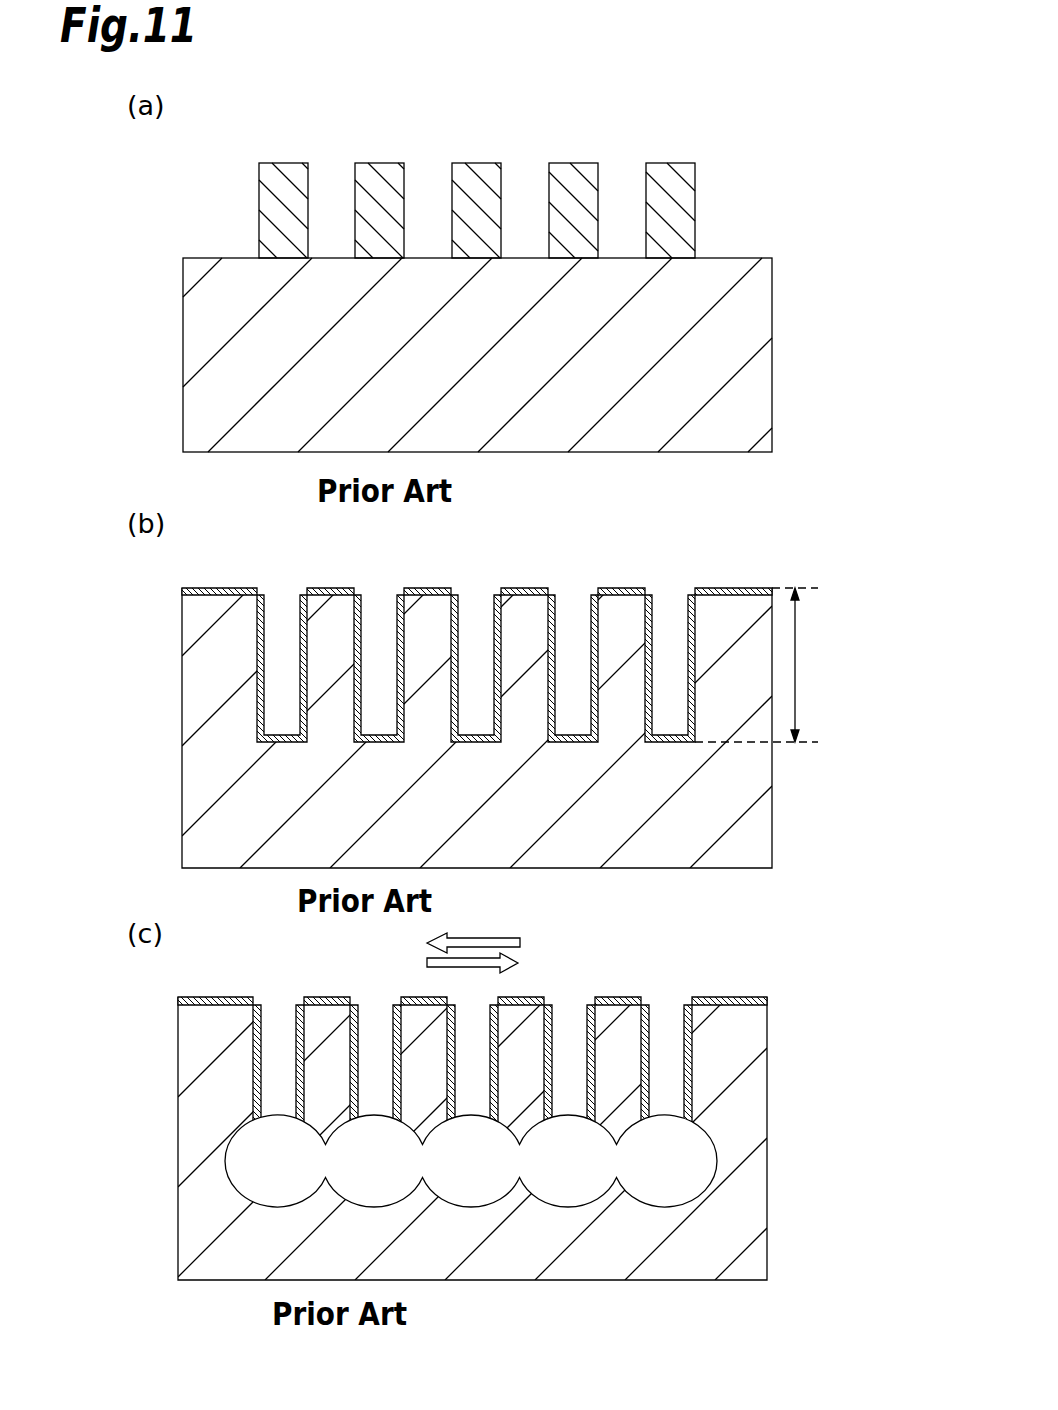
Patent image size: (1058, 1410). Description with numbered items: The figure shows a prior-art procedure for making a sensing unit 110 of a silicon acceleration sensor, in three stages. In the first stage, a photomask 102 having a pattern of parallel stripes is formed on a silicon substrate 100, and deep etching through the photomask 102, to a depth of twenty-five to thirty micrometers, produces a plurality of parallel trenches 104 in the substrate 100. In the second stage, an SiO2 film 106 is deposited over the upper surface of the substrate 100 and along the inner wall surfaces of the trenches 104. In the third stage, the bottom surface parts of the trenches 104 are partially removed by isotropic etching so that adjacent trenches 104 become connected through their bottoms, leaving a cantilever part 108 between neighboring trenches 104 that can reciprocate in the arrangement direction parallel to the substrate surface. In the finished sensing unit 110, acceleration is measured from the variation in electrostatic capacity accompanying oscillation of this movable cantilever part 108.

The silicon substrate 100 is at (762, 360).
The photomask 102 is at (670, 170).
The trenches 104 is at (572, 607).
The SiO2 film 106 is at (528, 590).
The cantilever part 108 is at (532, 992).
The sensing unit 110 is at (762, 972).